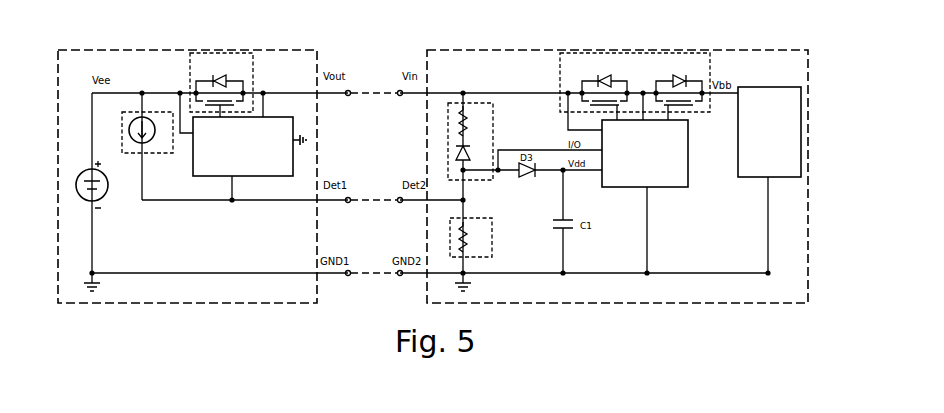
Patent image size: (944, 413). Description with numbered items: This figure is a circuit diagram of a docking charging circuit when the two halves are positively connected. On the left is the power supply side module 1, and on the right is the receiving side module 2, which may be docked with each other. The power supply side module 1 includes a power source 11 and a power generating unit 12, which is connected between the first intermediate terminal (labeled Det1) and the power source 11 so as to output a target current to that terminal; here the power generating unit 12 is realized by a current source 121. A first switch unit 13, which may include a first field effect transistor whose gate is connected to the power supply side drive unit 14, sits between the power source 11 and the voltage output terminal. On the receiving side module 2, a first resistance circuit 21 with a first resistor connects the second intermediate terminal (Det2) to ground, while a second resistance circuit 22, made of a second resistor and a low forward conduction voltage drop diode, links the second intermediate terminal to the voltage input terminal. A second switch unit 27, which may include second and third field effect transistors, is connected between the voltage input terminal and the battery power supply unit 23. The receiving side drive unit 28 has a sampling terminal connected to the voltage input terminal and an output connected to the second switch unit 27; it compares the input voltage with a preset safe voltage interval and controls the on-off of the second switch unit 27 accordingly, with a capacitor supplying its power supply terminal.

The power supply side module 1 is at (293, 50).
The receiving side module 2 is at (632, 50).
The power source 11 is at (80, 168).
The power generating unit 12 is at (127, 141).
The current source 121 is at (150, 142).
The first switch unit 13 is at (190, 70).
The power supply side drive unit 14 is at (250, 178).
The first resistance circuit 21 is at (493, 247).
The second resistance circuit 22 is at (470, 99).
The battery power supply unit 23 is at (803, 118).
The second switch unit 27 is at (560, 72).
The receiving side drive unit 28 is at (690, 173).